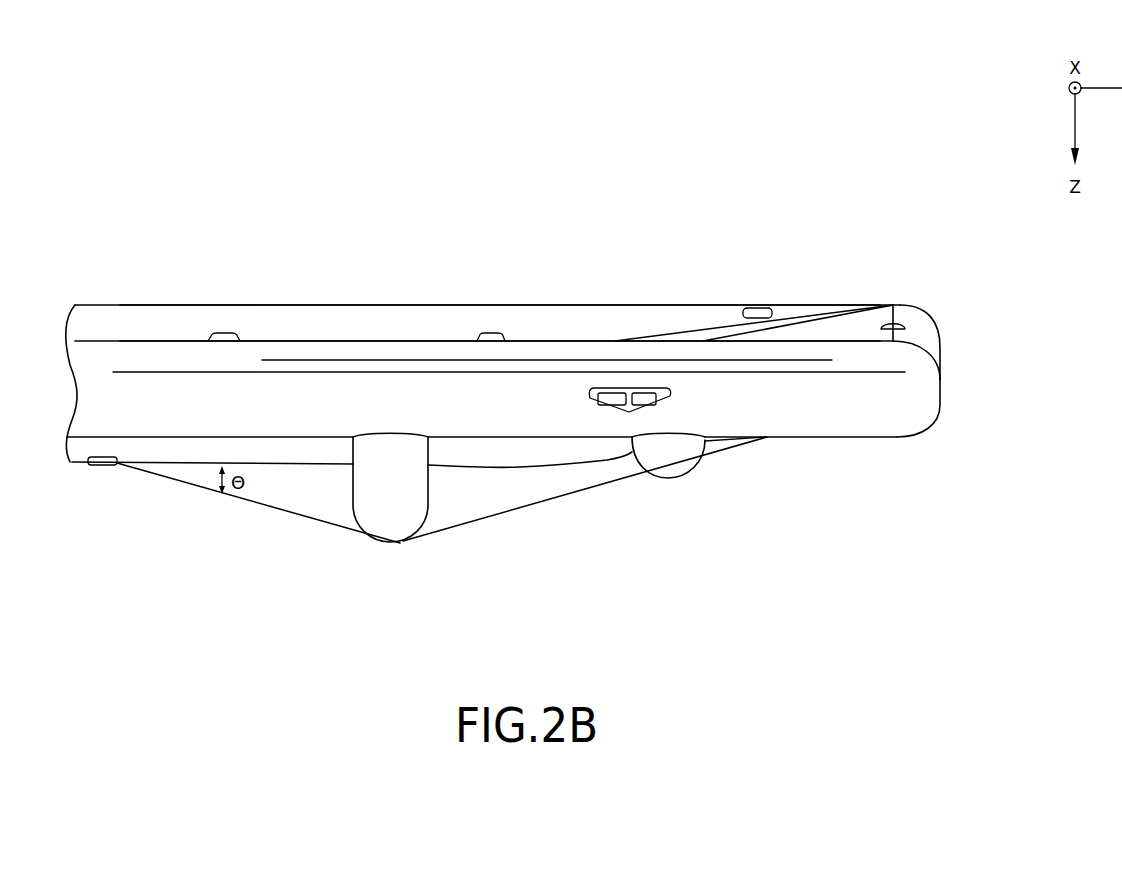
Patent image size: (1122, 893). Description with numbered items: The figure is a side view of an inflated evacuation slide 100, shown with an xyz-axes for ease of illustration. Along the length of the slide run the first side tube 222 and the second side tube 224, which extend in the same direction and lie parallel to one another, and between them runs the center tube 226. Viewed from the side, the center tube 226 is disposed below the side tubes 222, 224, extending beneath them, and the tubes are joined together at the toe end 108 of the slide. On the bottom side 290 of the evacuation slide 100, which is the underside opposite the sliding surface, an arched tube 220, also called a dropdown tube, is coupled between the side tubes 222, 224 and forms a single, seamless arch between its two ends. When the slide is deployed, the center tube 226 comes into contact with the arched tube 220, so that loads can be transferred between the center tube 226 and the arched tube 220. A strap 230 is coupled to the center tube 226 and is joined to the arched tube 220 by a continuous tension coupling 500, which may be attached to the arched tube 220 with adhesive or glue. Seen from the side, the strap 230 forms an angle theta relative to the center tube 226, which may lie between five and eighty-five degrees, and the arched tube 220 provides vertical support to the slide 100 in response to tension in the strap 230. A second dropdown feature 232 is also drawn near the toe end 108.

The evacuation slide 100 is at (832, 232).
The toe end 108 is at (953, 390).
The arched tube 220 is at (365, 491).
The side tube 222 is at (830, 408).
The side tube 224 is at (412, 305).
The center tube 226 is at (83, 465).
The strap 230 is at (265, 505).
The rear landing skid 232 is at (677, 453).
The bottom side 290 is at (190, 522).
The continuous tension coupling 500 is at (395, 541).